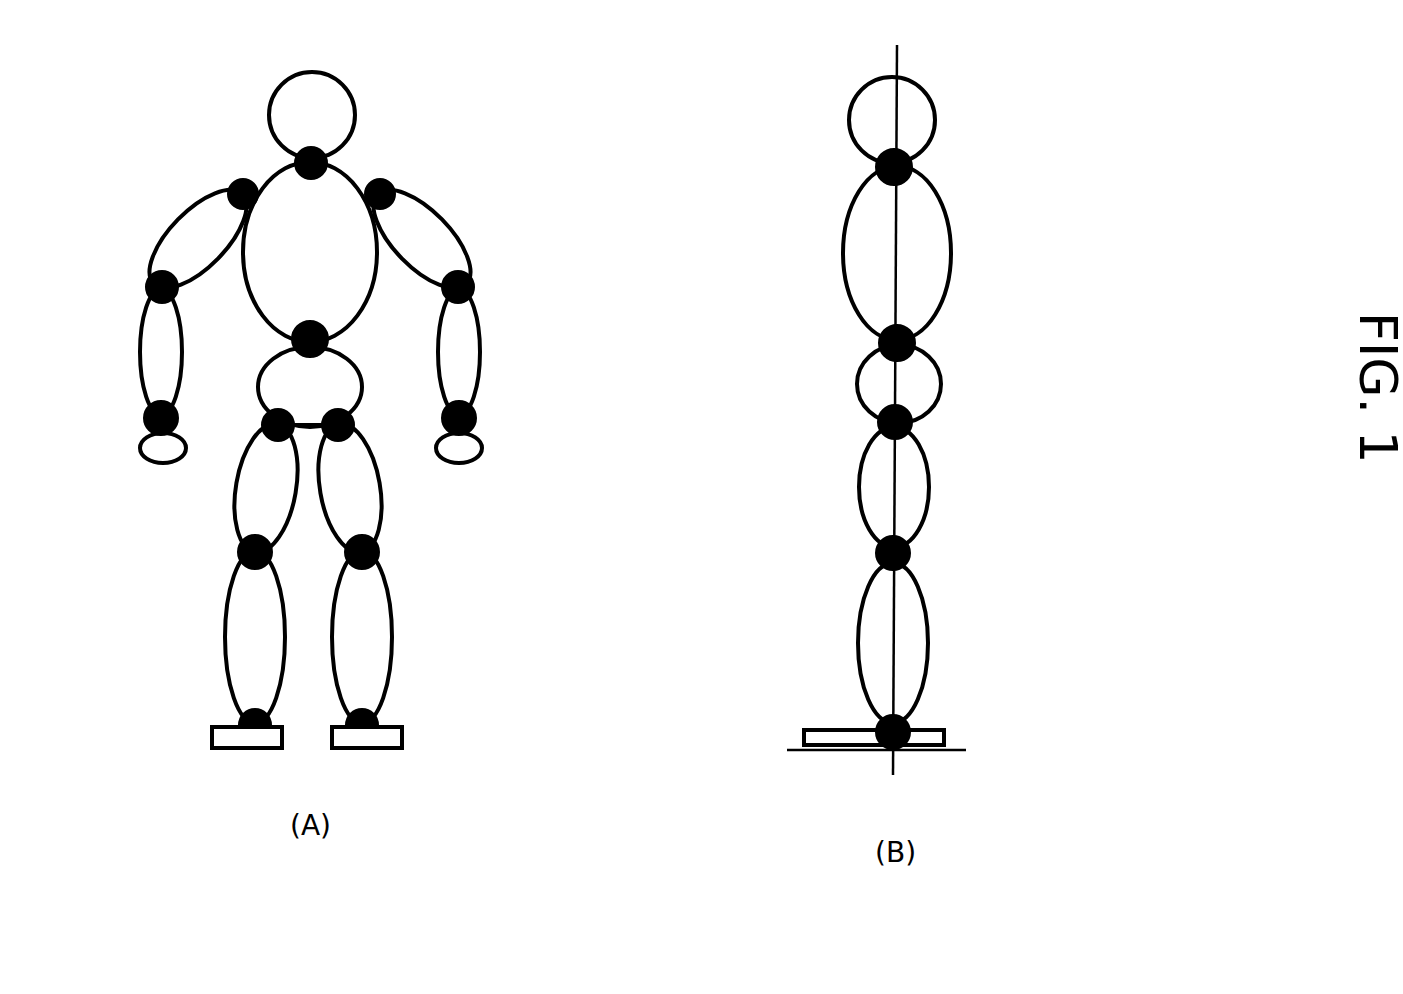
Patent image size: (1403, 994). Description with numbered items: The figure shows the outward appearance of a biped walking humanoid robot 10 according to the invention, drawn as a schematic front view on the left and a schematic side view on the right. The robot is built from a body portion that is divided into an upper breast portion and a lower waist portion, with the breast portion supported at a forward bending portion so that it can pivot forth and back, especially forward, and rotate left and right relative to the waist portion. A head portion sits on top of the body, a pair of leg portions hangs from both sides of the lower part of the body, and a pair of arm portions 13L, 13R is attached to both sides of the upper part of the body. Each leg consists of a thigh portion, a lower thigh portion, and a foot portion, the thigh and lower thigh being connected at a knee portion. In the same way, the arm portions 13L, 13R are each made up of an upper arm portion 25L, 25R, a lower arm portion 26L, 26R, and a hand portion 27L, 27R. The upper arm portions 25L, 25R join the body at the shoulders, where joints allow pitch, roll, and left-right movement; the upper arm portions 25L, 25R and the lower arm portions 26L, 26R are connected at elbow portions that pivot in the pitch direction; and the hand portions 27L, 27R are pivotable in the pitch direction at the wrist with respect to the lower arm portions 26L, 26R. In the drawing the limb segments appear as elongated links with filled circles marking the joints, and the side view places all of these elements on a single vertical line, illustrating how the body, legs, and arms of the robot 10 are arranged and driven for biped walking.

The biped walking humanoid robot 10 is at (495, 78).
The left arm portion 13L is at (457, 305).
The right arm portion 13R is at (157, 305).
The left upper arm portion 25L is at (405, 205).
The right upper arm portion 25R is at (210, 218).
The left lower arm portion 26L is at (473, 378).
The right lower arm portion 26R is at (155, 367).
The left hand portion 27L is at (472, 433).
The right hand portion 27R is at (147, 445).